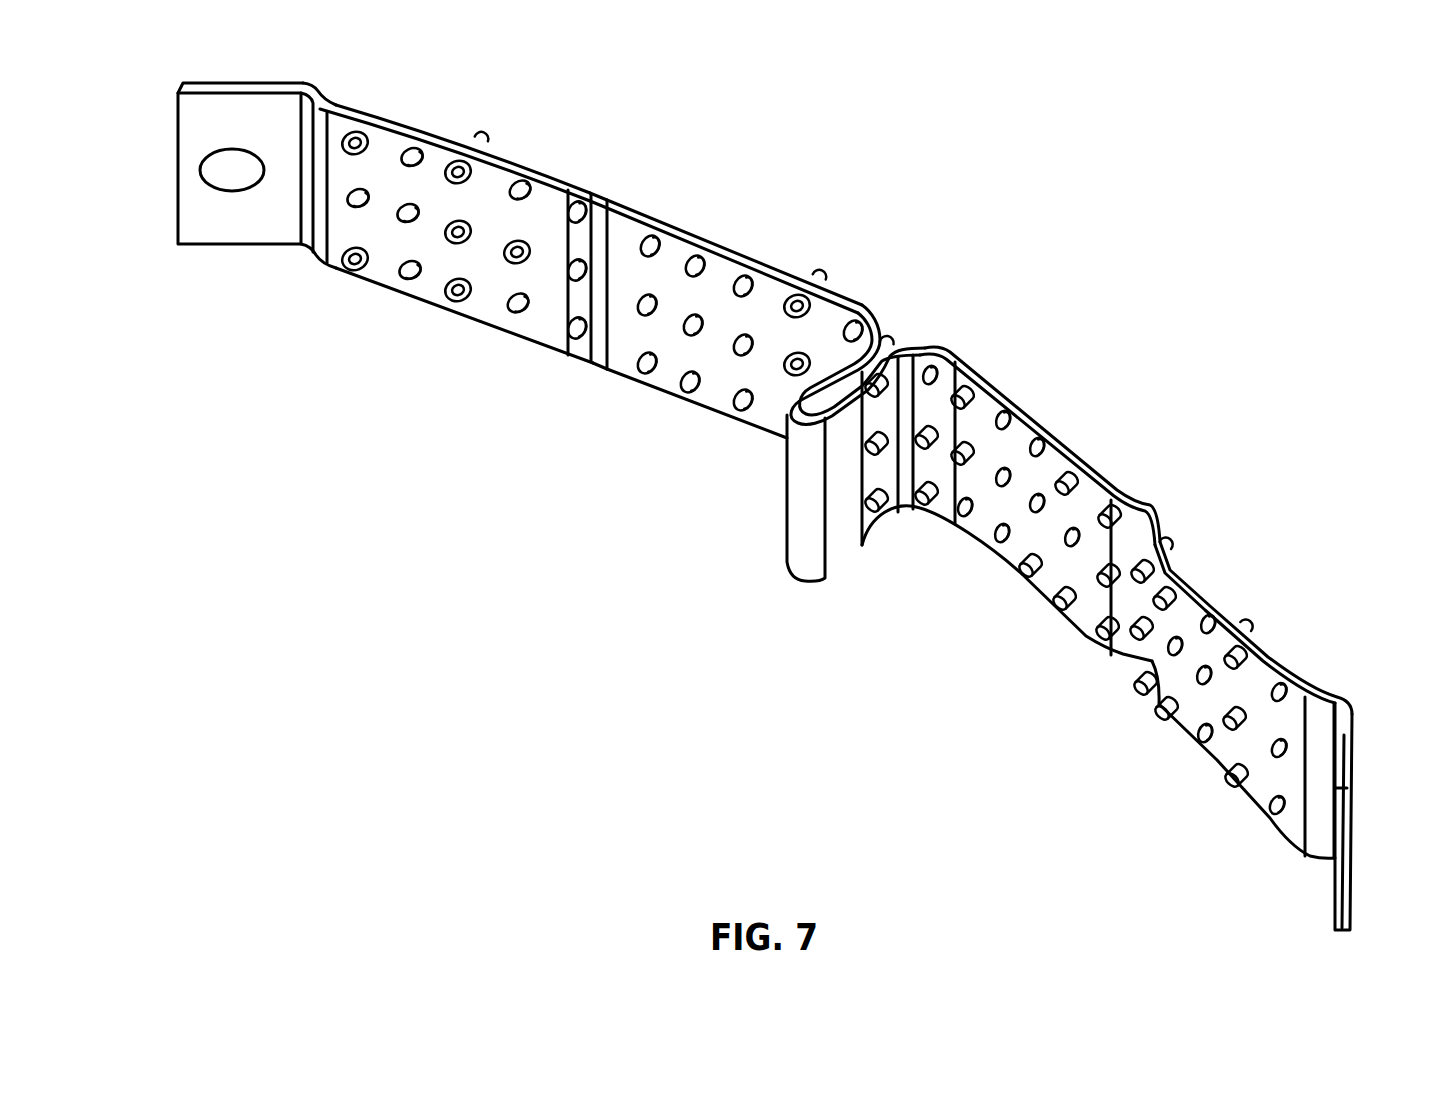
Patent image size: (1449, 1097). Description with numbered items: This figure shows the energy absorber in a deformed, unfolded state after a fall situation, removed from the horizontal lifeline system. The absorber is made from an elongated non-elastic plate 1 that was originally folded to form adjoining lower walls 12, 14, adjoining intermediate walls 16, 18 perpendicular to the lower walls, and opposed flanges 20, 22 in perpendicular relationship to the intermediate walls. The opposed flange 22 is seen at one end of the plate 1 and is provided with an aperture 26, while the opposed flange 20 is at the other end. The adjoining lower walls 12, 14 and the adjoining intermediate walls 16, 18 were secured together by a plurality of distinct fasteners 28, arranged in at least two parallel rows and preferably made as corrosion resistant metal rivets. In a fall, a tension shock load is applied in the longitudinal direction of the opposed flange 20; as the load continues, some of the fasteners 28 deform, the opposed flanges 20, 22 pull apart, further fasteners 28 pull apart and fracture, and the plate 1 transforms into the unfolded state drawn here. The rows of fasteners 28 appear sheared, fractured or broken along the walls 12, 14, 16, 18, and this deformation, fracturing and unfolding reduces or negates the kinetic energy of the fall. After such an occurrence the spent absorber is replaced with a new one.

The elongated non-elastic plate 1 is at (843, 552).
The lower wall 12 is at (1050, 585).
The lower wall 14 is at (725, 390).
The intermediate wall 16 is at (1226, 756).
The intermediate wall 18 is at (495, 300).
The opposed flange 20 is at (1357, 762).
The opposed flange 22 is at (195, 228).
The aperture 26 is at (213, 168).
The fasteners 28 is at (360, 133).